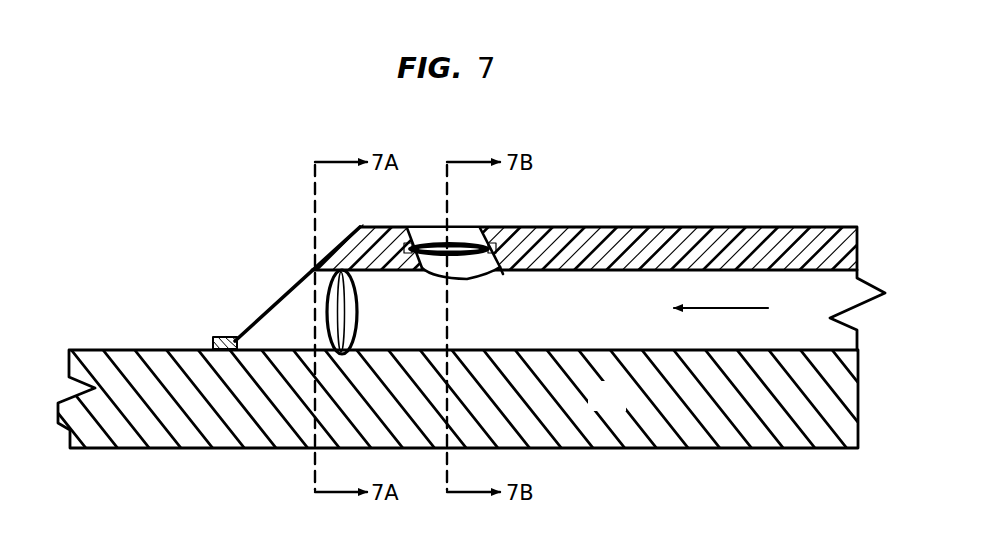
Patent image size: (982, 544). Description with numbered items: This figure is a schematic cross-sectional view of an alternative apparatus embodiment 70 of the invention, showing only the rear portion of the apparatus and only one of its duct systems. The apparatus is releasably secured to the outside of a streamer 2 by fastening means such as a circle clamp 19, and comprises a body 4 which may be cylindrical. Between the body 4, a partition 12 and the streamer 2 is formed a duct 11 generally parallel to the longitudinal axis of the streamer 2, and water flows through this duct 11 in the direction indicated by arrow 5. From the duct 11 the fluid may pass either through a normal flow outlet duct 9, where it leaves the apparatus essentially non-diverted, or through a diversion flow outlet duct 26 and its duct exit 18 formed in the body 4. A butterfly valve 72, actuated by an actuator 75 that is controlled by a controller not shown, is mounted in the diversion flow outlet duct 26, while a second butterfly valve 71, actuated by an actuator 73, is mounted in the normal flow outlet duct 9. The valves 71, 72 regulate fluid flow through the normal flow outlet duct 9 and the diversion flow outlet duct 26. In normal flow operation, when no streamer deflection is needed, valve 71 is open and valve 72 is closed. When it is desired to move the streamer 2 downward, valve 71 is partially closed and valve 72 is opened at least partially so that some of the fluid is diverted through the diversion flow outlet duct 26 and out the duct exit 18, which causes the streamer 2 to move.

The streamer 2 is at (617, 408).
The body 4 is at (807, 226).
The direction of water travel arrow 5 is at (735, 307).
The normal flow outlet duct 9 is at (380, 288).
The duct 11 is at (608, 290).
The partition 12 is at (268, 308).
The duct exit 18 is at (462, 231).
The circle clamp 19 is at (225, 335).
The diversion flow outlet duct 26 is at (423, 230).
The alternative apparatus embodiment 70 is at (695, 182).
The second butterfly valve 71 is at (357, 314).
The butterfly valve 72 is at (470, 273).
The actuator 73 is at (332, 253).
The actuator 75 is at (493, 238).